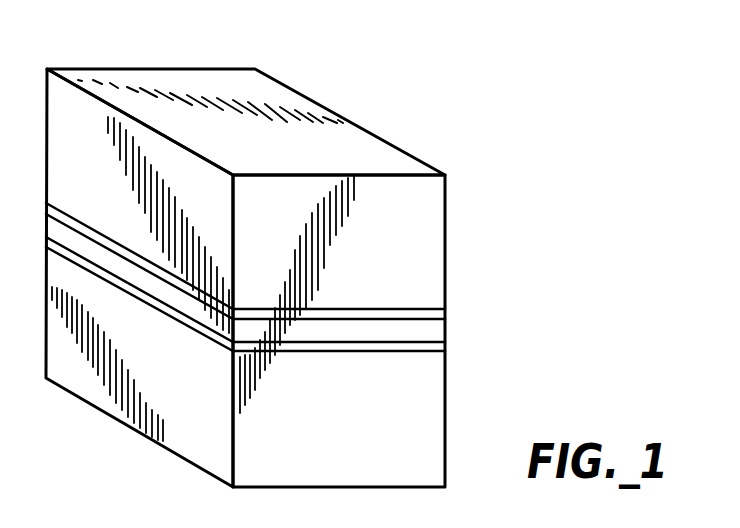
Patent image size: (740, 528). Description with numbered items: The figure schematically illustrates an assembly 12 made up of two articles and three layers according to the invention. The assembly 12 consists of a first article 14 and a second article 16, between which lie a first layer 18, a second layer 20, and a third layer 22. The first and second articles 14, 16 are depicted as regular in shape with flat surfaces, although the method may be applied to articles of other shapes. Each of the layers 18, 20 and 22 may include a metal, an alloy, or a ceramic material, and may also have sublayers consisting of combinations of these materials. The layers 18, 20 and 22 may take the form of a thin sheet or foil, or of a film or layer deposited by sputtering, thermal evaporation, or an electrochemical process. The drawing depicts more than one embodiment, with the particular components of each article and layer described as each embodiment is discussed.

The assembly 12 is at (96, 56).
The first article 14 is at (432, 227).
The second article 16 is at (430, 448).
The first layer 18 is at (437, 333).
The second layer 20 is at (443, 312).
The third layer 22 is at (437, 348).